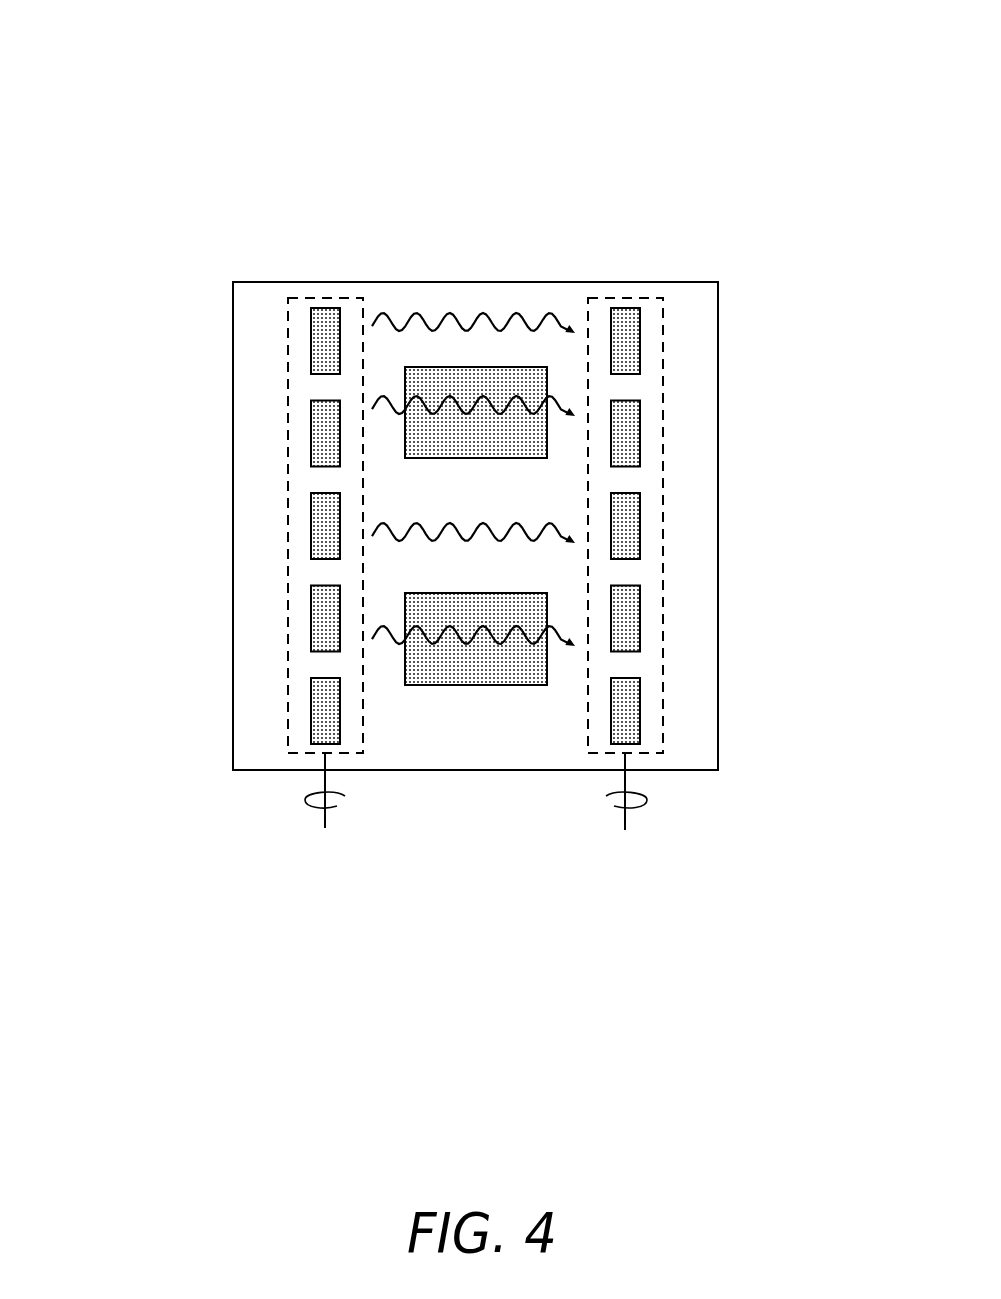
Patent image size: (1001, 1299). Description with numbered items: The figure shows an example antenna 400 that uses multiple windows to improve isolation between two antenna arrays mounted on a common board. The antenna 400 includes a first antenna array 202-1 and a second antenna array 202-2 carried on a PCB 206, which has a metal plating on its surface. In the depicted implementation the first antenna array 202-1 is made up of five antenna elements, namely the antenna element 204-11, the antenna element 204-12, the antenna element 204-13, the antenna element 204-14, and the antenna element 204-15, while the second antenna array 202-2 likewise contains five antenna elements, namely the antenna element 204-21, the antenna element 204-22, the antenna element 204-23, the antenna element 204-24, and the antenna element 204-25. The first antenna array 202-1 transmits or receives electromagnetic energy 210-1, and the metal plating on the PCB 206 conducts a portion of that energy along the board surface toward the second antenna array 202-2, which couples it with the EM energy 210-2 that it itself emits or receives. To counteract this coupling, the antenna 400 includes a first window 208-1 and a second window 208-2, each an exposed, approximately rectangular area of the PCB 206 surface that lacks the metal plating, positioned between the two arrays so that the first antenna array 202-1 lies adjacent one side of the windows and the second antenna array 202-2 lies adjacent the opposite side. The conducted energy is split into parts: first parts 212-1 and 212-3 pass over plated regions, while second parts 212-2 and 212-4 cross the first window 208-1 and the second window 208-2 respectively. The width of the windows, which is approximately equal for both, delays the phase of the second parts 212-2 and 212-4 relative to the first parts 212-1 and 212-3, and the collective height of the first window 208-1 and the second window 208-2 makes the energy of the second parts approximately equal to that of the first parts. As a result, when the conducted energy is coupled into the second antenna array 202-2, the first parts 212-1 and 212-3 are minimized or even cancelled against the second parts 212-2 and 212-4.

The antenna 400 is at (209, 64).
The first antenna array 202-1 is at (325, 298).
The second antenna array 202-2 is at (625, 298).
The antenna element 204-11 is at (311, 340).
The antenna element 204-12 is at (311, 432).
The antenna element 204-13 is at (311, 525).
The antenna element 204-14 is at (311, 618).
The antenna element 204-15 is at (311, 710).
The antenna element 204-21 is at (640, 340).
The antenna element 204-22 is at (640, 432).
The antenna element 204-23 is at (640, 525).
The antenna element 204-24 is at (640, 618).
The antenna element 204-25 is at (640, 710).
The PCB 206 is at (478, 770).
The first window 208-1 is at (507, 458).
The second window 208-2 is at (508, 685).
The electromagnetic energy 210-1 is at (308, 793).
The EM energy 210-2 is at (647, 799).
The first part of the portion of the EM energy 212-1 is at (460, 330).
The second part of the portion of the EM energy 212-2 is at (400, 412).
The first part of the portion of the EM energy 212-3 is at (465, 540).
The second part of the portion of the EM energy 212-4 is at (402, 642).